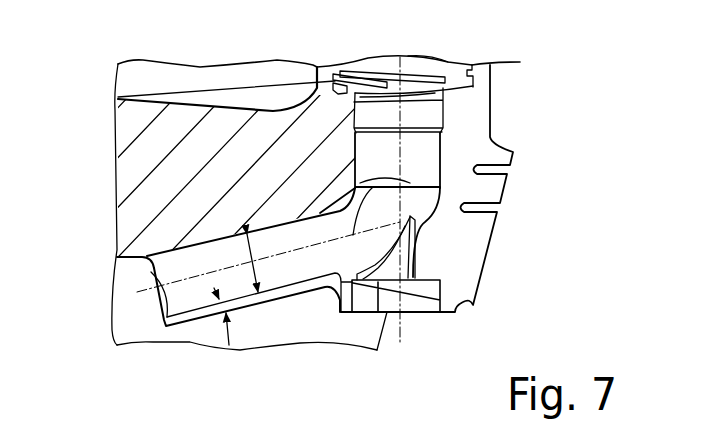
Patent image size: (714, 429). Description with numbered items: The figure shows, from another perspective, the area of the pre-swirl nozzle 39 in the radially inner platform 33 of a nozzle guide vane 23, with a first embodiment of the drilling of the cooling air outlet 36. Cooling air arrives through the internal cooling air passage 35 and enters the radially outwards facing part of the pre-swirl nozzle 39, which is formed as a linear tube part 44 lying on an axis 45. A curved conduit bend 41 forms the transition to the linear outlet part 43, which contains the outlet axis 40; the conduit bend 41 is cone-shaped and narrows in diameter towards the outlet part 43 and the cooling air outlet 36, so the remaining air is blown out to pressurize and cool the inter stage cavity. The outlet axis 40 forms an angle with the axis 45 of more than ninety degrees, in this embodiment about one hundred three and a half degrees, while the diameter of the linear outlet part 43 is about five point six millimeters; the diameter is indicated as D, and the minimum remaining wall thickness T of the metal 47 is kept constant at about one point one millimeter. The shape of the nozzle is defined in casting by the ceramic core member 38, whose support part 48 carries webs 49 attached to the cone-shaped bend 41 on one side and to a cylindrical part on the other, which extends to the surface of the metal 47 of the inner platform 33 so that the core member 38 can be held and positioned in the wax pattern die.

The nozzle guide vane 23 is at (114, 102).
The radially inner platform 33 is at (137, 170).
The internal cooling air passage 35 is at (357, 88).
The core member 38 is at (445, 55).
The axis 45 is at (403, 105).
The pre-swirl nozzle 39 is at (452, 155).
The linear tube part 44 is at (420, 180).
The curved conduit bend 41 is at (365, 205).
The linear outlet part 43 is at (300, 270).
The cooling air outlet 36 is at (147, 268).
The outlet axis 40 is at (161, 313).
The metal 47 is at (196, 318).
The webs 49 is at (417, 262).
The support part 48 is at (450, 292).
The channel diameter D is at (250, 318).
The minimum remaining wall thickness T is at (229, 345).